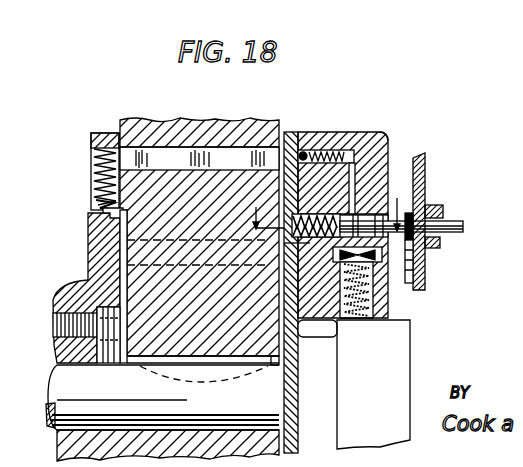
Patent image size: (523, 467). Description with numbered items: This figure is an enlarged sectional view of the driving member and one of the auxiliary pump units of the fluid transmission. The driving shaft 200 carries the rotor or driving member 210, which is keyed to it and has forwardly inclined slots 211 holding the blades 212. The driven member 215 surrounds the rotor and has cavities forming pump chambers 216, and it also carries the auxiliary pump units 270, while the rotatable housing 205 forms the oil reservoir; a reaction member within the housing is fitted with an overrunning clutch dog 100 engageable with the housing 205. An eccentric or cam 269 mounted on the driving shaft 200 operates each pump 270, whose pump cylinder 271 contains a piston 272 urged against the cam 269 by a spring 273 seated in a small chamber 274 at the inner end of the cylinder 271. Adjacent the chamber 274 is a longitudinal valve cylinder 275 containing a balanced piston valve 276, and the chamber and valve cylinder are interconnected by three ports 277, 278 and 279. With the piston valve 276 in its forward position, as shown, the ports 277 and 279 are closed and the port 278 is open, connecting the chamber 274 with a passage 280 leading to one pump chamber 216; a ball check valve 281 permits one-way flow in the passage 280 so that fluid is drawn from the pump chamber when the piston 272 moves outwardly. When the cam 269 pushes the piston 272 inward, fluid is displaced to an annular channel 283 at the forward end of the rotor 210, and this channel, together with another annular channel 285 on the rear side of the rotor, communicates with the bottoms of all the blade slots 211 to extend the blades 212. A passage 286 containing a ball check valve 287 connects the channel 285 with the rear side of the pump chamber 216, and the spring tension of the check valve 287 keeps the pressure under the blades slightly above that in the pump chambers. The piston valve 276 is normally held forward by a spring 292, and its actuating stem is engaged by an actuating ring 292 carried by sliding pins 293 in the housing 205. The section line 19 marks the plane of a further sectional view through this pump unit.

The driven member 215 is at (157, 119).
The pump chamber 216 is at (251, 153).
The blade 212 is at (184, 168).
The ball check valve 287 is at (98, 205).
The passage 286 is at (103, 212).
The driving member 210 is at (131, 228).
The slot 211 is at (130, 250).
The annular channel 285 is at (123, 272).
The driving shaft 200 is at (92, 394).
The overrunning clutch dog 100 is at (112, 362).
The annular channel 283 is at (286, 339).
The auxiliary pump unit 270 is at (352, 163).
The passage 280 is at (382, 133).
The ball check valve 281 is at (304, 148).
The valve cylinder 275 is at (356, 213).
The piston valve 276 is at (343, 213).
The port 278 is at (284, 243).
The sliding pin 293 is at (464, 224).
The port 277 is at (345, 253).
The pump cylinder 271 is at (386, 306).
The piston 272 is at (365, 318).
The cam 269 is at (380, 366).
The housing 205 is at (426, 192).
The spring 292 is at (436, 208).
The port 279 is at (441, 244).
The chamber 274 is at (414, 258).
The spring 273 is at (414, 272).
The section line 19- 19 is at (323, 206).